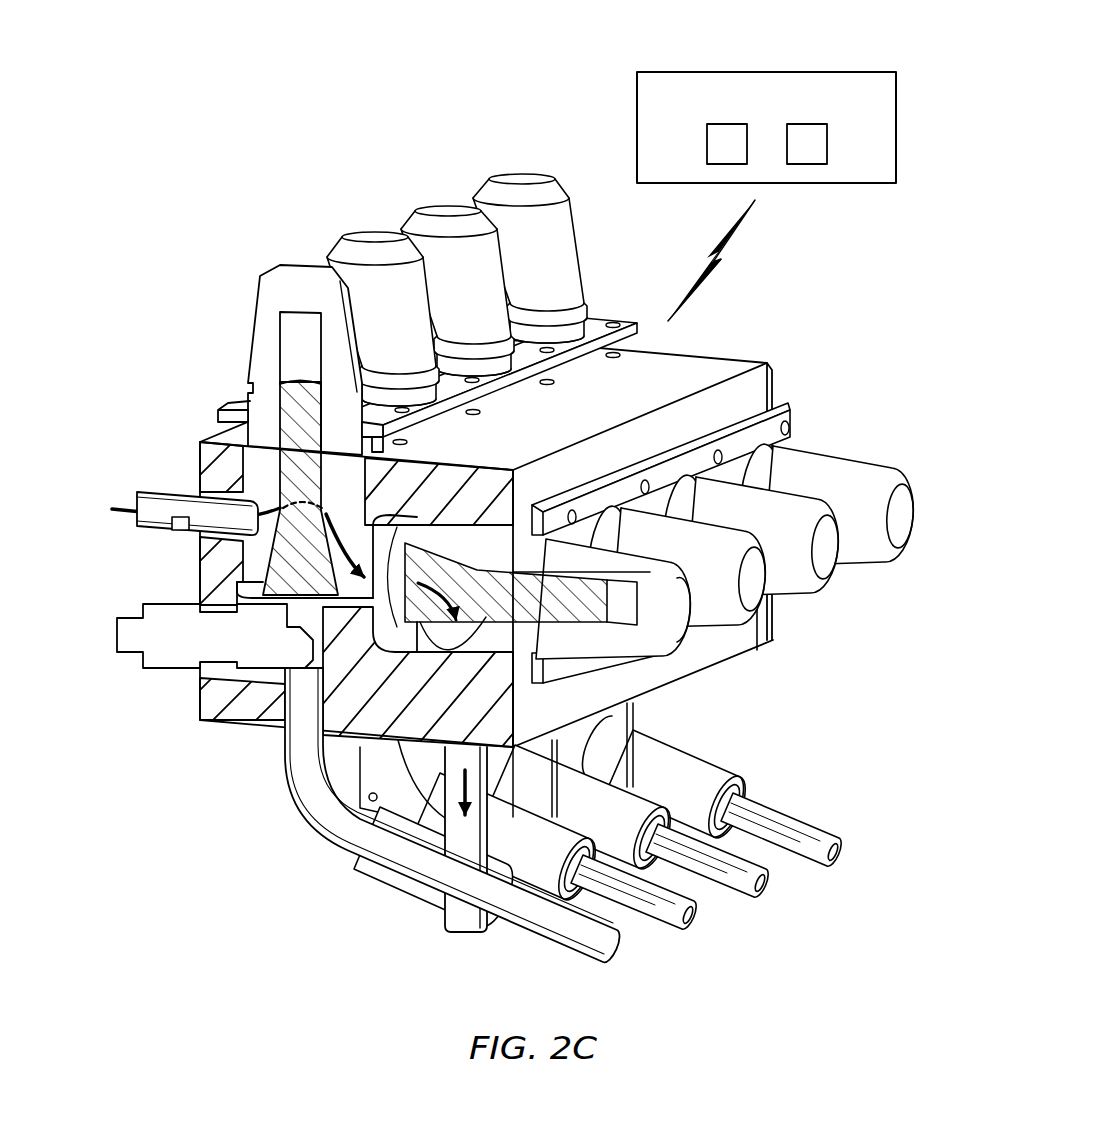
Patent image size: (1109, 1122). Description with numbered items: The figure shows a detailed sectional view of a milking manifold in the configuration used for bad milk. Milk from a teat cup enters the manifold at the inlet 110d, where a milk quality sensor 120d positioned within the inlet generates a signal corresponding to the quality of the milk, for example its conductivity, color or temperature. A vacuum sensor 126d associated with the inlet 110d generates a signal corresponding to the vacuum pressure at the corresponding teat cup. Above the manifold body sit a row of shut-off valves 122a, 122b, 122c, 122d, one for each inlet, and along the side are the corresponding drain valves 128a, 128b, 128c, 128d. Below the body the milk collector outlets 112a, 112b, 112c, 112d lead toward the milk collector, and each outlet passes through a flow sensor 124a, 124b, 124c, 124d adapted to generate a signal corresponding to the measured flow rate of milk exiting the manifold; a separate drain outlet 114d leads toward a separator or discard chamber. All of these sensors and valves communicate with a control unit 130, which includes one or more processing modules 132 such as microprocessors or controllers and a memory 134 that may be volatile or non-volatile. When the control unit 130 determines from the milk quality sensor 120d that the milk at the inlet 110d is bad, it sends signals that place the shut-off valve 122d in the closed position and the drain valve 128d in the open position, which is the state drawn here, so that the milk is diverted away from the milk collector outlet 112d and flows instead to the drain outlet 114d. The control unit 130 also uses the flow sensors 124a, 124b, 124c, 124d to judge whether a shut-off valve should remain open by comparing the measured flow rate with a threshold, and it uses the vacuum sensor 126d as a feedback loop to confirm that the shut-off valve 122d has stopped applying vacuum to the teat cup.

The inlet 110d is at (172, 494).
The milk collector outlet 112a is at (842, 857).
The milk collector outlet 112b is at (770, 890).
The milk collector outlet 112c is at (697, 917).
The milk collector outlet 112d is at (627, 947).
The drain outlet 114d is at (470, 933).
The milk quality sensor 120d is at (180, 533).
The shut-off valve 122a is at (515, 175).
The shut-off valve 122b is at (443, 205).
The shut-off valve 122c is at (372, 232).
The shut-off valve 122d is at (302, 262).
The flow sensor 124a is at (750, 790).
The flow sensor 124b is at (640, 773).
The flow sensor 124c is at (567, 807).
The flow sensor 124d is at (390, 887).
The vacuum sensor 126d is at (130, 653).
The drain valve 128a is at (840, 455).
The drain valve 128b is at (822, 590).
The drain valve 128c is at (755, 628).
The drain valve 128d is at (680, 650).
The control unit 130 is at (778, 68).
The processing module 132 is at (707, 141).
The memory 134 is at (827, 141).